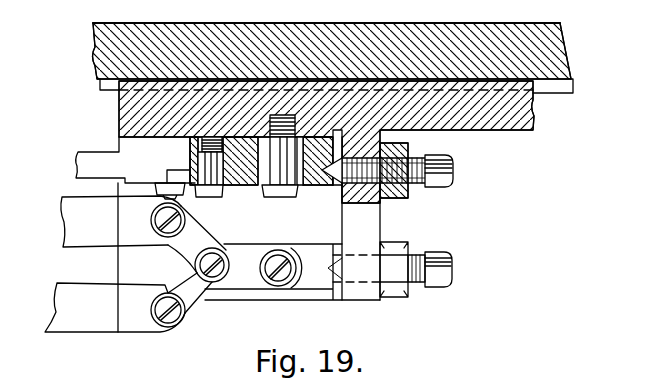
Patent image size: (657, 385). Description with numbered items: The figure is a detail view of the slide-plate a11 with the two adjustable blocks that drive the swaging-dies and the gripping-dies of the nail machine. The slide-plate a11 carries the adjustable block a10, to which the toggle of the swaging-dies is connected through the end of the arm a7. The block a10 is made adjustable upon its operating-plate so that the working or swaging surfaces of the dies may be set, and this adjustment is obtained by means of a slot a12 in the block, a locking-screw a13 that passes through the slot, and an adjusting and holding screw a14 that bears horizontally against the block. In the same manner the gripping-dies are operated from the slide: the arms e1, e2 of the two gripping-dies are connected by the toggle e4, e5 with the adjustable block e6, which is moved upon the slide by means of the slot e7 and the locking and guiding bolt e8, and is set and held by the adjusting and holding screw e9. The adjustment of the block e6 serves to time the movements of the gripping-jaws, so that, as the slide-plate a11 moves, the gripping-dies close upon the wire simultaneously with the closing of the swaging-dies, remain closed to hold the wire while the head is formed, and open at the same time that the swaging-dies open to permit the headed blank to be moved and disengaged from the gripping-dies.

The arm a7 is at (93, 158).
The adjustable block a10 is at (246, 184).
The slide-plate a11 is at (326, 142).
The slot a12 is at (303, 183).
The locking-screw a13 is at (277, 188).
The adjusting and holding screw a14 is at (417, 184).
The arm e1 is at (115, 307).
The arm e2 is at (121, 221).
The toggle link e4 is at (192, 233).
The toggle link e5 is at (193, 297).
The adjustable block e6 is at (292, 271).
The slot e7 is at (300, 283).
The locking and guiding bolt e8 is at (276, 281).
The adjusting and holding screw e9 is at (413, 283).